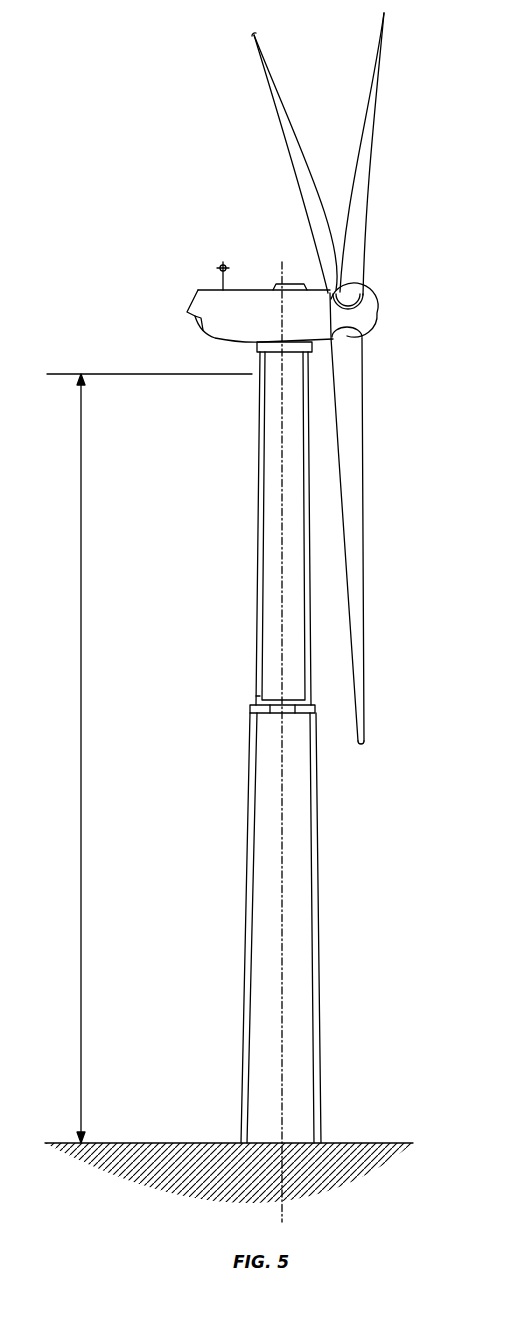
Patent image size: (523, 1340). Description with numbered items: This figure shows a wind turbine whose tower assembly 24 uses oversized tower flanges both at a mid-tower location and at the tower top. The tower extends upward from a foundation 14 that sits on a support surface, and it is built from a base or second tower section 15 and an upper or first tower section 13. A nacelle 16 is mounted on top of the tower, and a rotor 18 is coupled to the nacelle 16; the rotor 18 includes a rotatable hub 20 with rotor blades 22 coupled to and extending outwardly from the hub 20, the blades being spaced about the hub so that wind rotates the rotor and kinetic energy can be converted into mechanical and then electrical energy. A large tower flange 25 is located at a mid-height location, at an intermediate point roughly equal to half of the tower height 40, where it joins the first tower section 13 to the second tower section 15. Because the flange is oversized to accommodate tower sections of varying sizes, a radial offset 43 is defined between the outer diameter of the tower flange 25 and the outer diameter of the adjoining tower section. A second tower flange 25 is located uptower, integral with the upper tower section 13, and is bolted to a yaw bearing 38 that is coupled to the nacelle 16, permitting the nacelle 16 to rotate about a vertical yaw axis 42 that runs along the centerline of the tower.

The upper tower section 13 is at (272, 528).
The foundation 14 is at (365, 1143).
The base tower section 15 is at (248, 815).
The nacelle 16 is at (215, 303).
The rotor 18 is at (334, 378).
The rotatable hub 20 is at (374, 311).
The rotor blade 22 is at (300, 162).
The tower assembly 24 is at (285, 556).
The tower flange 25 is at (260, 359).
The yaw bearing 38 is at (256, 348).
The tower height 40 is at (80, 730).
The yaw axis 42 is at (283, 617).
The radial offset 43 is at (255, 698).